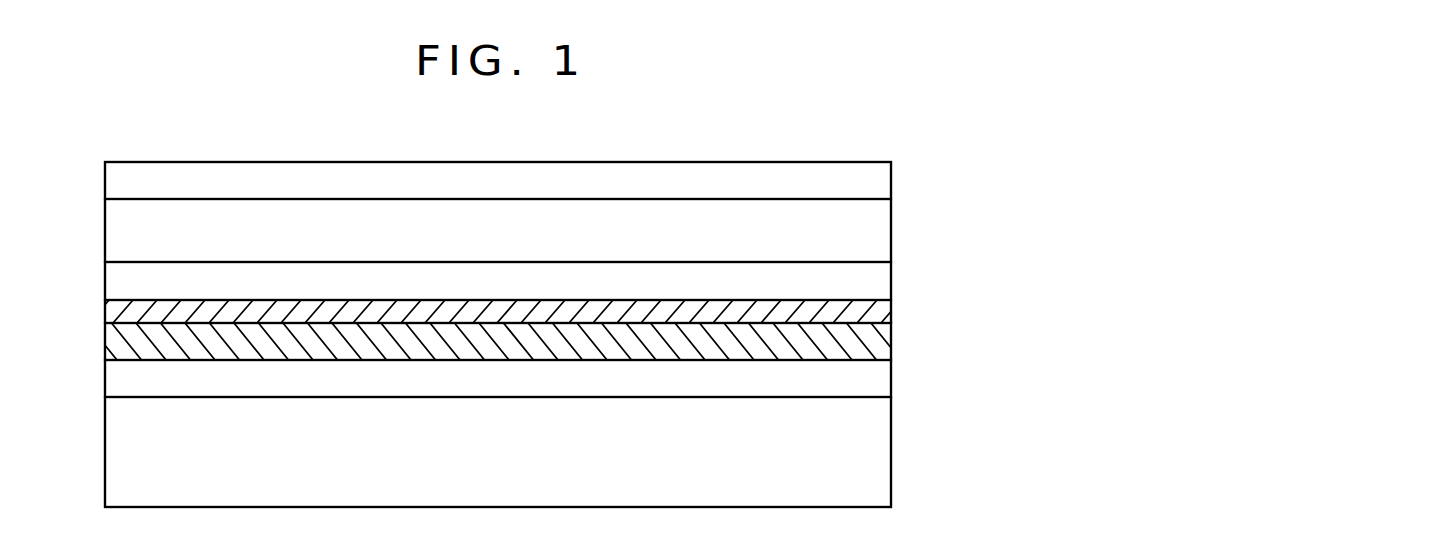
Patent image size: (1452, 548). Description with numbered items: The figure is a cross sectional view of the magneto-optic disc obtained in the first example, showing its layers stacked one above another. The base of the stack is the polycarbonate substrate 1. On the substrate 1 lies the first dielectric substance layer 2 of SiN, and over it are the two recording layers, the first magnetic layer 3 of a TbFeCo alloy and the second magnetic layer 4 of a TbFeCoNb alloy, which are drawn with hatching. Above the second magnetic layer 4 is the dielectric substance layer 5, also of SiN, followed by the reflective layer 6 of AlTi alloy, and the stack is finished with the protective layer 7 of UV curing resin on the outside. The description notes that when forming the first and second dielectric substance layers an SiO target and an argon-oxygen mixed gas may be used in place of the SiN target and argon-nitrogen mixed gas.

The polycarbonate substrate 1 is at (891, 457).
The first dielectric substance layer 2 is at (891, 382).
The first magnetic layer 3 is at (891, 343).
The second magnetic layer 4 is at (891, 307).
The dielectric substance layer 5 is at (891, 275).
The reflective layer 6 is at (891, 225).
The protective layer 7 is at (891, 178).